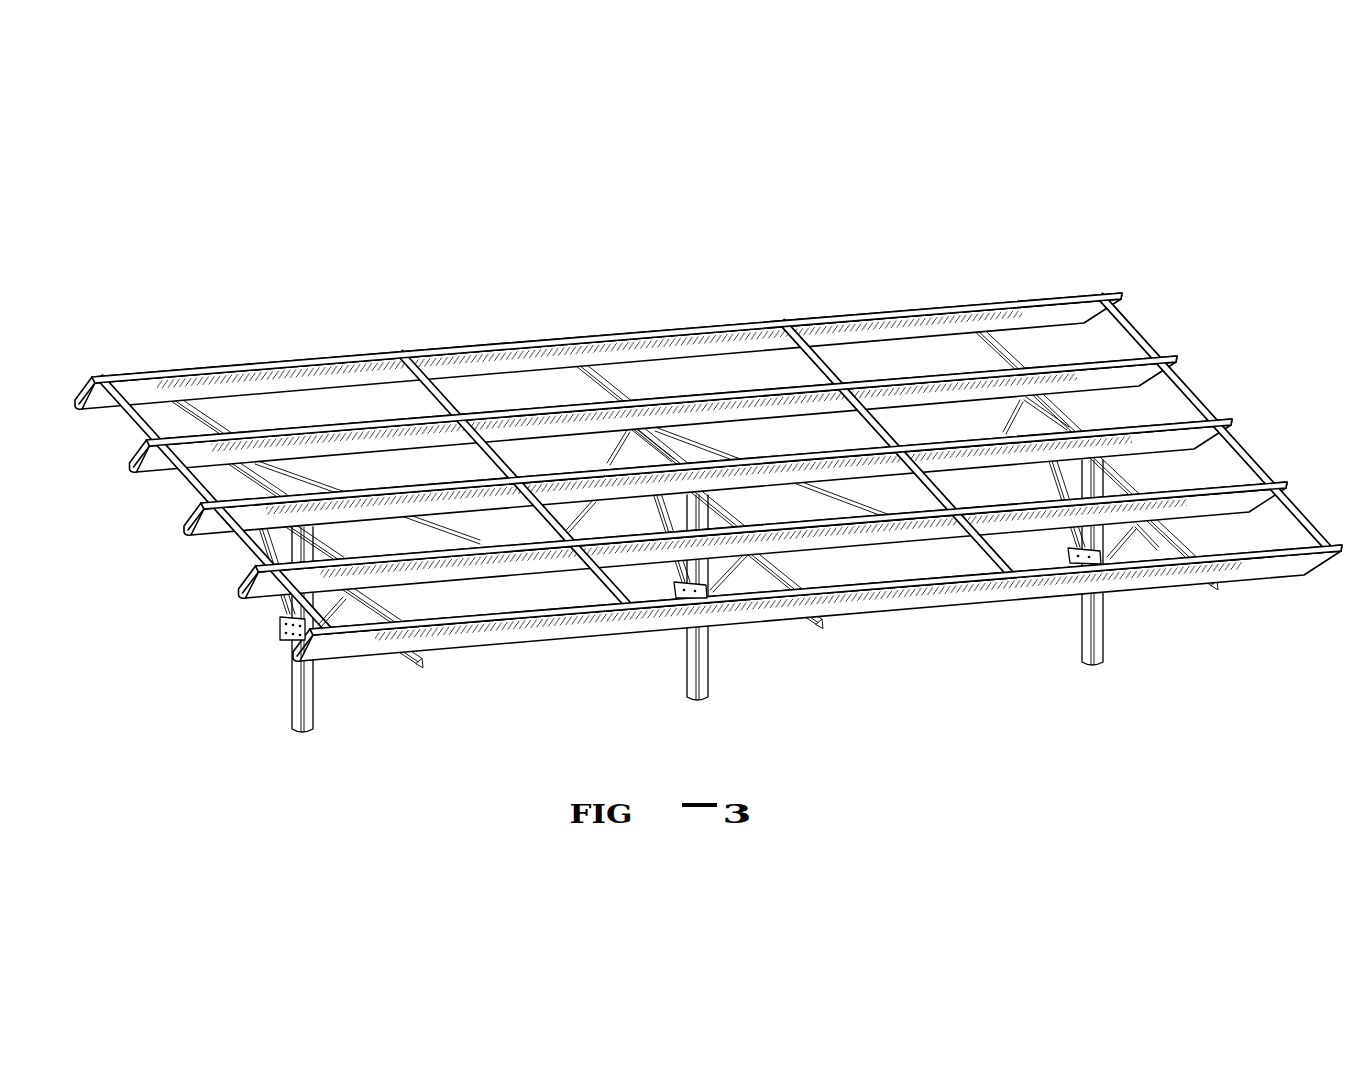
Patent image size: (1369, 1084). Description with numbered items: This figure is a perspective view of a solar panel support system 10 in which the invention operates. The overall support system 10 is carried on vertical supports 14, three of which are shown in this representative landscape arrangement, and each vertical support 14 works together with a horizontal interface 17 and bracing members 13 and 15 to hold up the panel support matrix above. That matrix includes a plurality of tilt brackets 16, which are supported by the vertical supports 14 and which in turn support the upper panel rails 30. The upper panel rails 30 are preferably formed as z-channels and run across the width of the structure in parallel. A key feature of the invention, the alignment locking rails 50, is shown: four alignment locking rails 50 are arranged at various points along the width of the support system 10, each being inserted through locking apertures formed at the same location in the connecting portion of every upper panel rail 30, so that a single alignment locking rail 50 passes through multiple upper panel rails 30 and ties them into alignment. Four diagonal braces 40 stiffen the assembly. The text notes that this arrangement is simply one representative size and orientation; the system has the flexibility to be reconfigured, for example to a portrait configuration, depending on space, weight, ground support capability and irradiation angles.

The support system 10 is at (712, 228).
The bracing member 13 is at (262, 547).
The vertical support 14 is at (298, 709).
The bracing member 15 is at (332, 615).
The tilt bracket 16 is at (215, 405).
The horizontal interface 17 is at (283, 641).
The upper panel rail 30 is at (918, 312).
The diagonal brace 40 is at (335, 482).
The alignment locking rail 50 is at (130, 412).